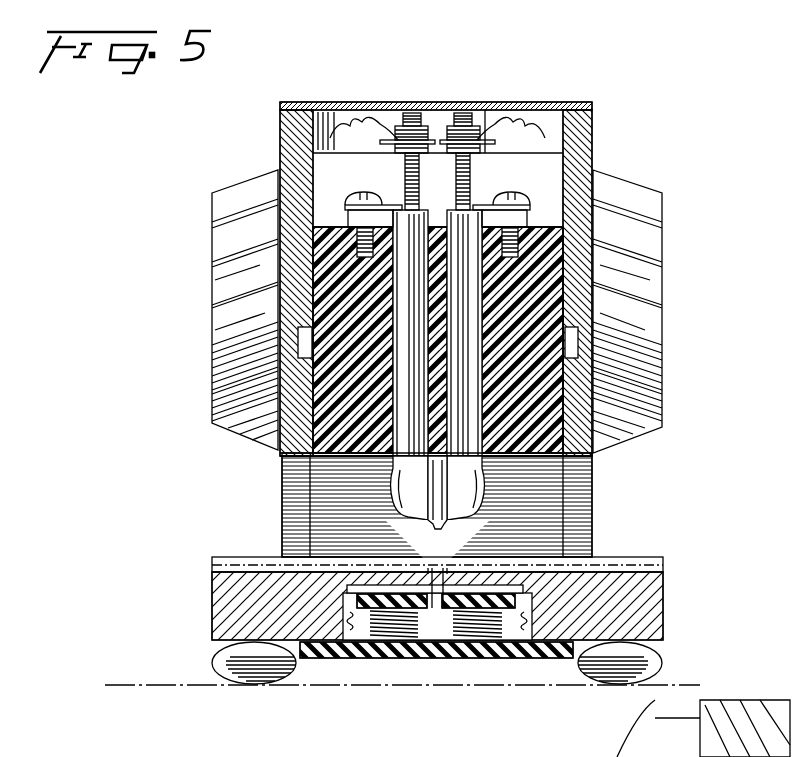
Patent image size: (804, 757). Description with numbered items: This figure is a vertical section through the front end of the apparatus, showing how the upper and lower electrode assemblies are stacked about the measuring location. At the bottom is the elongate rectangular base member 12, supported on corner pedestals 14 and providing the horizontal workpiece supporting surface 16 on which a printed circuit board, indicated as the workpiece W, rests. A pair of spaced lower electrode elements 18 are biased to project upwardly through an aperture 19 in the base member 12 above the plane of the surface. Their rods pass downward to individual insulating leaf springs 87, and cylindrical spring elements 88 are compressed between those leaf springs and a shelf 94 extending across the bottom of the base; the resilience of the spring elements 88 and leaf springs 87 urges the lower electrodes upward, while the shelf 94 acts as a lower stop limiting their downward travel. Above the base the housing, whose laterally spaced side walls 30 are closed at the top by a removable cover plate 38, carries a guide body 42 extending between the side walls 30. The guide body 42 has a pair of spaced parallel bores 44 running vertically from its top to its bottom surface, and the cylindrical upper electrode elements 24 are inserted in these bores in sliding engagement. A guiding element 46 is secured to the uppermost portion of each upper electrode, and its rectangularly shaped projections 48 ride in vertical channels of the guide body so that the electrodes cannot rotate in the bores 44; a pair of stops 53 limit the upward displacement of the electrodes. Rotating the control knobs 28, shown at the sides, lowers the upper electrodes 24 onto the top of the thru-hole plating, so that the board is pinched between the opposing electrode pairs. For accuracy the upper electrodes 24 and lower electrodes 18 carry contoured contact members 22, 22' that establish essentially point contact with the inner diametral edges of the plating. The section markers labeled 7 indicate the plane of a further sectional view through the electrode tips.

The base member 12 is at (665, 607).
The corner pedestals 14 is at (248, 668).
The workpiece supporting surface 16 is at (660, 558).
The web / workpiece W is at (638, 556).
The lower electrode elements 18 is at (437, 575).
The aperture 19 is at (428, 577).
The contact members 22 is at (351, 512).
The contact members 22' is at (437, 613).
The upper electrode elements 24 is at (410, 414).
The control knobs 28 is at (218, 290).
The side walls 30 is at (280, 148).
The cover plate 38 is at (490, 102).
The guide body 42 is at (600, 438).
The bores 44 is at (395, 332).
The guiding element 46 is at (462, 238).
The rectangularly shaped projections 48 is at (393, 243).
The stops 53 is at (390, 200).
The insulating leaf springs 87 is at (487, 612).
The cylindrical spring elements 88 is at (465, 640).
The shelf 94 is at (360, 654).
The section line 7- 7 is at (505, 498).